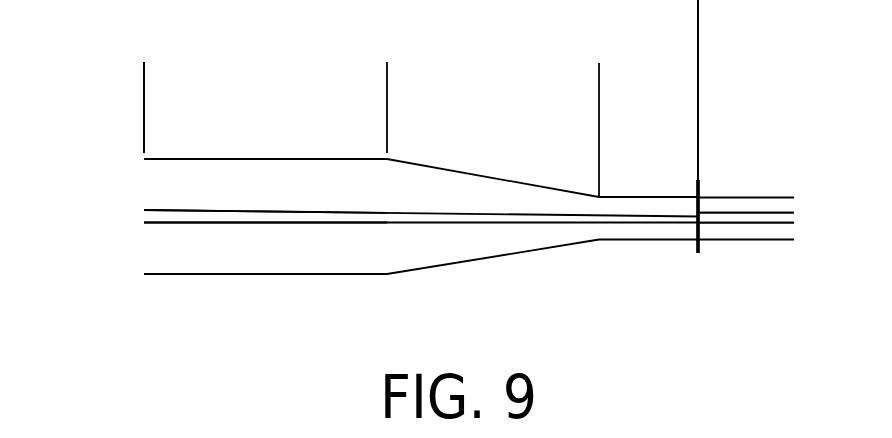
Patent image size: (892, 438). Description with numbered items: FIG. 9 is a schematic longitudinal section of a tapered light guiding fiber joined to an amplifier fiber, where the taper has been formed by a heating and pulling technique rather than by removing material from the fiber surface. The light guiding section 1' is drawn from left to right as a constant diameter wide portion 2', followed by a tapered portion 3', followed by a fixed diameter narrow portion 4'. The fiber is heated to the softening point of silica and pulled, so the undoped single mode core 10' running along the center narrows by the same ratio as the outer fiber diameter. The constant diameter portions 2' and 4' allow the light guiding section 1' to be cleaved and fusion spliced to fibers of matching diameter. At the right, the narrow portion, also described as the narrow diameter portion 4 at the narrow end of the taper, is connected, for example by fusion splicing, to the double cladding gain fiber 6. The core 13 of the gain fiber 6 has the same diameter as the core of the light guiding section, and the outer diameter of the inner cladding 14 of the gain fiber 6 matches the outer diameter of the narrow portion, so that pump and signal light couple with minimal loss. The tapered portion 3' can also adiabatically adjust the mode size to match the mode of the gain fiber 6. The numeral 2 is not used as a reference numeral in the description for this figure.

The constant diameter wide portion 2' is at (265, 183).
The tapered portion 3' is at (493, 186).
The narrow portion 4' is at (648, 176).
The undoped core 10' is at (265, 268).
The inner cladding 14 is at (753, 203).
The core 13 is at (712, 221).
The light guiding section 1' is at (421, 90).
The double cladding gain fiber 6 is at (764, 25).
The narrow diameter portion 4 is at (207, 205).
The core rod 2 is at (207, 195).